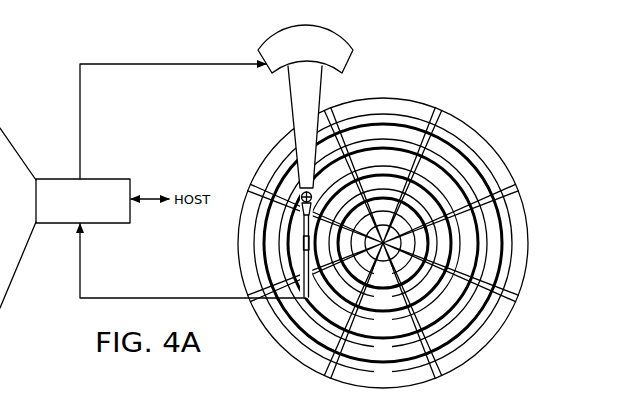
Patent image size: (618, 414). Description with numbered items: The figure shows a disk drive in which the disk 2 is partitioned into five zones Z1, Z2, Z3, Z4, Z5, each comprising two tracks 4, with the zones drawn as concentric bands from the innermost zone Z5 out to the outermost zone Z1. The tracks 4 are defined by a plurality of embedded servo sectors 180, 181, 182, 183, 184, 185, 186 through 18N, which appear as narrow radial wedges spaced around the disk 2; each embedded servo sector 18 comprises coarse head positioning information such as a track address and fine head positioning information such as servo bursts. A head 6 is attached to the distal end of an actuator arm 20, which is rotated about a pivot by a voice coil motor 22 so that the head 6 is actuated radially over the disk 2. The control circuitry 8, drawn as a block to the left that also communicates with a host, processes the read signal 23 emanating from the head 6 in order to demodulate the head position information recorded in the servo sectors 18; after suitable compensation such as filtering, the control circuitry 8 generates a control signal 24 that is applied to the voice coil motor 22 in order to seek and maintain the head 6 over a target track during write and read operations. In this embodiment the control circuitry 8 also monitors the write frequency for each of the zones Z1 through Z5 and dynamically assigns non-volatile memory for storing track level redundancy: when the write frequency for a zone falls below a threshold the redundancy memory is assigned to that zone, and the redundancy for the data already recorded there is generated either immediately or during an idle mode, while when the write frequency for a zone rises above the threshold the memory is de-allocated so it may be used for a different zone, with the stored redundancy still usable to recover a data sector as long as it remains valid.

The disk 2 is at (388, 217).
The tracks 4 is at (382, 110).
The head 6 is at (300, 251).
The control circuitry 8 is at (107, 178).
The embedded servo sector 18 is at (388, 247).
The embedded servo sector N 18N is at (329, 111).
The embedded servo sector 0 180 is at (440, 111).
The embedded servo sector 1 181 is at (519, 190).
The embedded servo sector 2 182 is at (520, 302).
The embedded servo sector 3 183 is at (438, 380).
The embedded servo sector 4 184 is at (327, 379).
The embedded servo sector 5 185 is at (249, 301).
The embedded servo sector 6 186 is at (248, 185).
The actuator arm 20 is at (291, 124).
The voice coil motor 22 is at (272, 73).
The read signal 23 is at (161, 297).
The control signal 24 is at (80, 113).
The zone Z1 is at (383, 374).
The zone Z2 is at (383, 350).
The zone Z3 is at (383, 325).
The zone Z4 is at (383, 298).
The zone Z5 is at (383, 274).